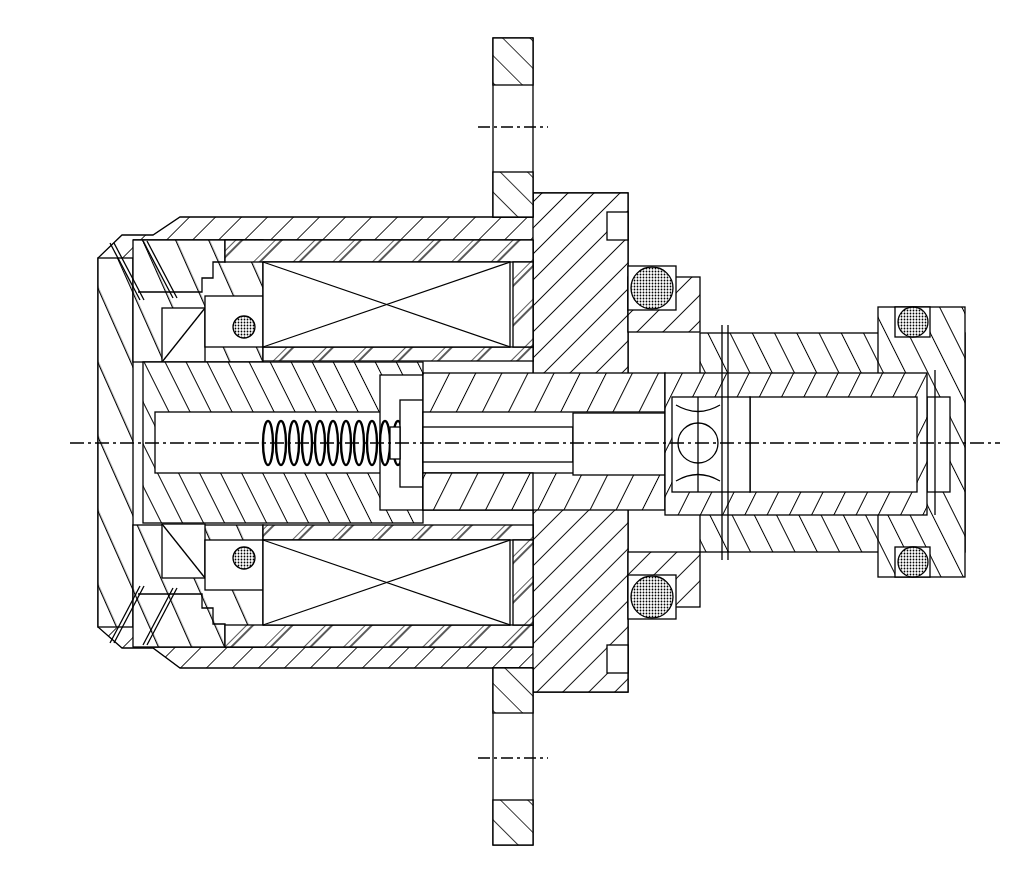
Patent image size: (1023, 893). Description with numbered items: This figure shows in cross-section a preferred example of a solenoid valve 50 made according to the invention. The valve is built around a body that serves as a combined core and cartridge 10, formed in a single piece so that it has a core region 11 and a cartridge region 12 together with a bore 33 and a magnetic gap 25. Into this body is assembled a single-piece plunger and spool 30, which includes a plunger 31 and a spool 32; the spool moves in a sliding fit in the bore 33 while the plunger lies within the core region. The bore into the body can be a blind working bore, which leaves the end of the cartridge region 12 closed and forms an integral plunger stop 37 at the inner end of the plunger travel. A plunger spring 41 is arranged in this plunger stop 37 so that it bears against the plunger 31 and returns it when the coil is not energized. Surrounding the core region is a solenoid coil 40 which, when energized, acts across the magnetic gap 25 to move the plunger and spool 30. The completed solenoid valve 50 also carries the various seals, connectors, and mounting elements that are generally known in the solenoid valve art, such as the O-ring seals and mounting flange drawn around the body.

The solenoid valve 50 is at (628, 137).
The core and cartridge 10 is at (628, 233).
The cartridge region 12 is at (810, 347).
The core region 11 is at (350, 375).
The magnetic gap 25 is at (398, 560).
The plunger and spool 30 is at (593, 392).
The plunger 31 is at (490, 500).
The spool 32 is at (783, 500).
The bore 33 is at (368, 485).
The plunger stop 37 is at (163, 498).
The solenoid coil 40 is at (360, 272).
The plunger spring 41 is at (280, 437).